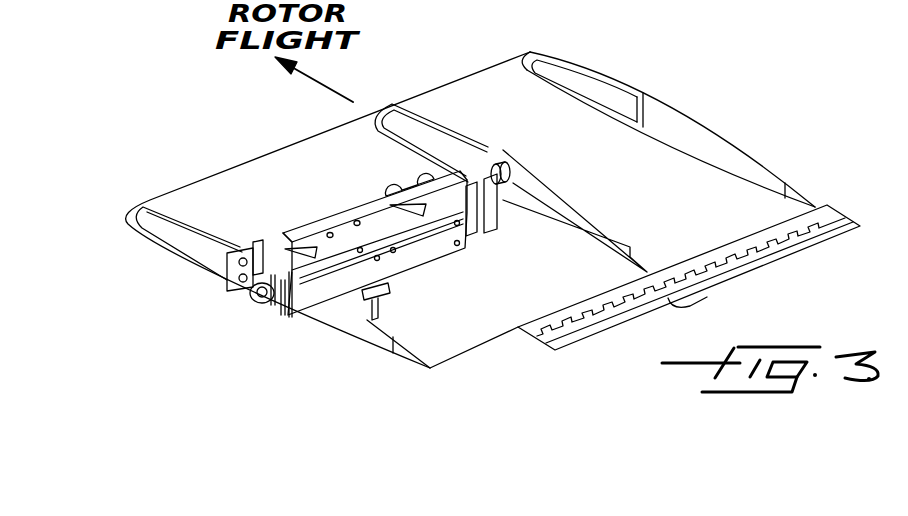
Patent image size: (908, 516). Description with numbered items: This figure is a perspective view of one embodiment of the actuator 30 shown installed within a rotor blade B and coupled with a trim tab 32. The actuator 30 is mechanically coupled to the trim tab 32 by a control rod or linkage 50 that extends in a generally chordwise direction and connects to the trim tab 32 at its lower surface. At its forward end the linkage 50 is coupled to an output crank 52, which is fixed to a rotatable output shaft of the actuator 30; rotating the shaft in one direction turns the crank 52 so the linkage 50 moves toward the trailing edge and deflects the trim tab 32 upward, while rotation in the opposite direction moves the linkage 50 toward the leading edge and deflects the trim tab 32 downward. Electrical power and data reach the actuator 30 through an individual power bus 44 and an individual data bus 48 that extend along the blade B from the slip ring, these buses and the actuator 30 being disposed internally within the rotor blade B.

The rotor blade B is at (215, 180).
The actuator 30 is at (448, 277).
The trim tab 32 is at (763, 265).
The power bus 44 is at (295, 340).
The data bus 48 is at (372, 300).
The linkage 50 is at (562, 210).
The output crank 52 is at (478, 172).